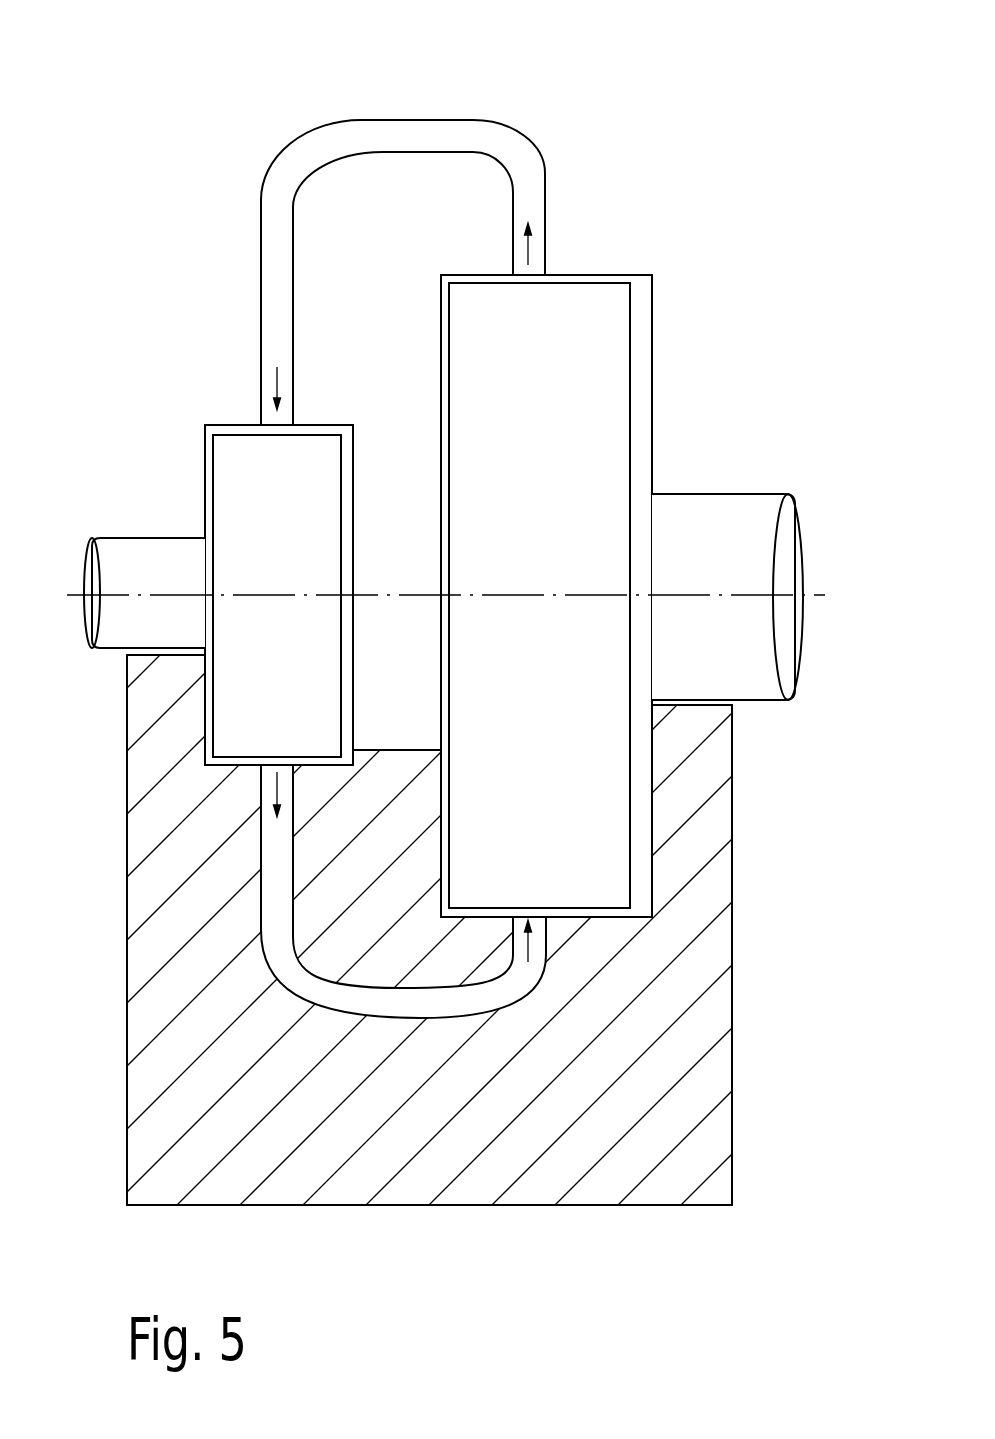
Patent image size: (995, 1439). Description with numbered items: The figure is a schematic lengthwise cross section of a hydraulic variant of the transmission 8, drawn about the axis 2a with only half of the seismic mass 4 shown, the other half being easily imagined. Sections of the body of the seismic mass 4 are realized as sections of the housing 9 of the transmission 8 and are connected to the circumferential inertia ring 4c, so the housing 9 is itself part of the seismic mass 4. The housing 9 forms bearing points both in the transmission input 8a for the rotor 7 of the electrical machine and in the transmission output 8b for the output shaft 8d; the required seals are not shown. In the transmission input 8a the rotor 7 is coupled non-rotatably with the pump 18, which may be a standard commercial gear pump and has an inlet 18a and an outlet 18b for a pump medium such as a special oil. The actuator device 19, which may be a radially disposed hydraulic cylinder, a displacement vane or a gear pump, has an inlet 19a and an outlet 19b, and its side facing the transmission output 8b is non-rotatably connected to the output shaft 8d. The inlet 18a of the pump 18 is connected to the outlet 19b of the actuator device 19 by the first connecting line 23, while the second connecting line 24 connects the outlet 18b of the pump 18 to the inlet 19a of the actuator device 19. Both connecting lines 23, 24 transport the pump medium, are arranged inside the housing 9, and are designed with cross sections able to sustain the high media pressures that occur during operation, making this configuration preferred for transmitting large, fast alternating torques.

The axis of rotation 2a is at (813, 595).
The seismic mass 4 is at (677, 1207).
The circumferential inertia ring 4c is at (447, 1165).
The rotor 7 is at (115, 563).
The transmission 8 is at (482, 80).
The transmission input 8a is at (118, 456).
The transmission output 8b is at (723, 409).
The output shaft 8d is at (767, 493).
The housing 9 is at (143, 725).
The pump 18 is at (201, 317).
The inlet 18a is at (258, 423).
The outlet 18b is at (258, 768).
The actuator device 19 is at (646, 172).
The inlet 19a is at (547, 921).
The outlet 19b is at (545, 272).
The first connecting line 23 is at (372, 122).
The second connecting line 24 is at (267, 885).